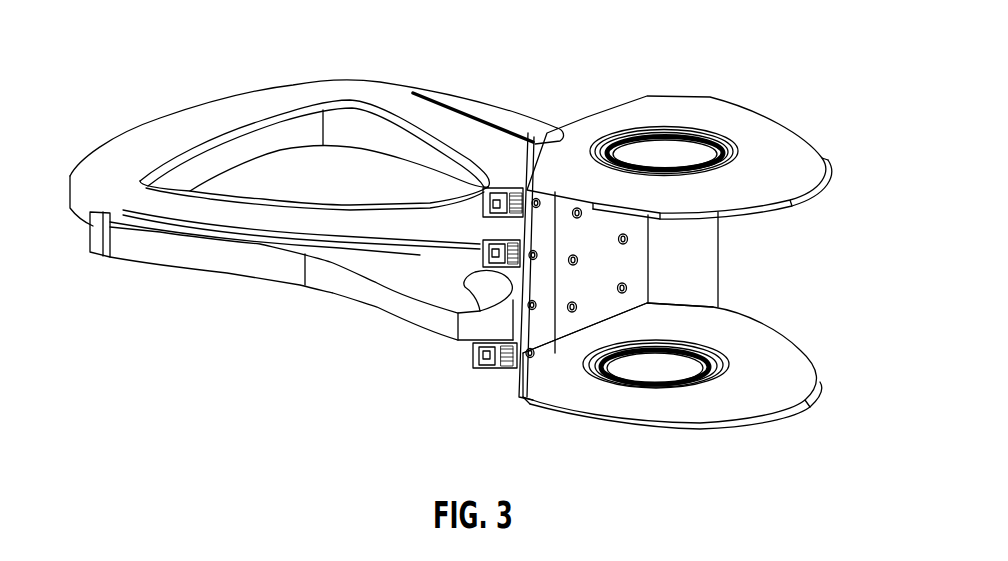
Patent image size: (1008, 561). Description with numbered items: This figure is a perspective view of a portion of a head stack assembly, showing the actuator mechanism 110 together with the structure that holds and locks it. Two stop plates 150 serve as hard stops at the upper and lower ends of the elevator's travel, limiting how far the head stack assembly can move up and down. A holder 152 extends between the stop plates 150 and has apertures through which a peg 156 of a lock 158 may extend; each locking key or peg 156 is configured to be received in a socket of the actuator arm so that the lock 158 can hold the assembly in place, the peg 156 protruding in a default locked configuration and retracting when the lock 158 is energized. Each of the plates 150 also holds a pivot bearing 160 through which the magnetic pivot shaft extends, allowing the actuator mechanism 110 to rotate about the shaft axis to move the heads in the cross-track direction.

The actuator mechanism 110 is at (212, 114).
The stop plate 150 is at (800, 152).
The holder 152 is at (716, 301).
The peg 156 is at (628, 288).
The lock 158 is at (483, 252).
The pivot bearing 160 is at (712, 140).